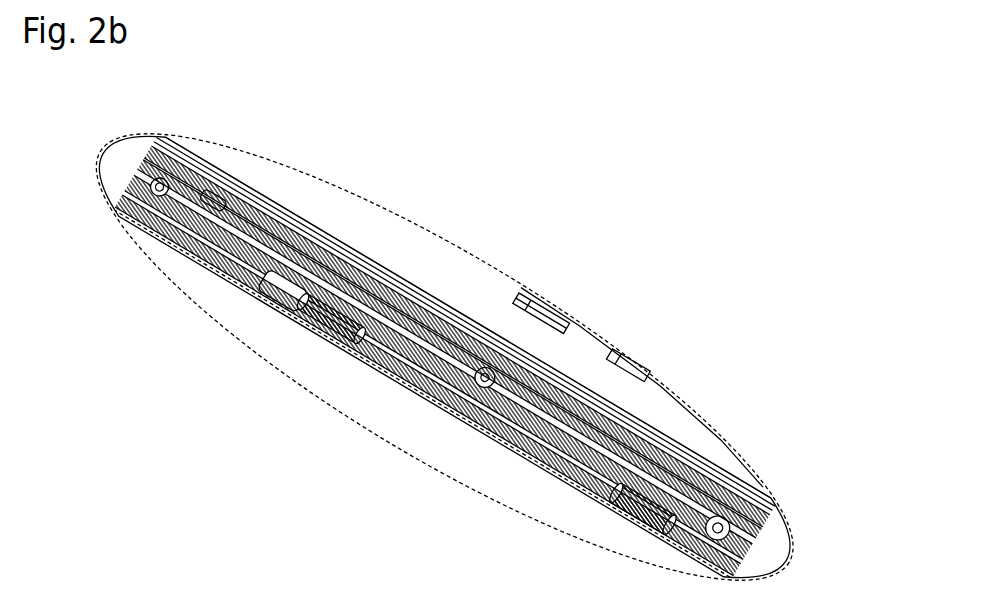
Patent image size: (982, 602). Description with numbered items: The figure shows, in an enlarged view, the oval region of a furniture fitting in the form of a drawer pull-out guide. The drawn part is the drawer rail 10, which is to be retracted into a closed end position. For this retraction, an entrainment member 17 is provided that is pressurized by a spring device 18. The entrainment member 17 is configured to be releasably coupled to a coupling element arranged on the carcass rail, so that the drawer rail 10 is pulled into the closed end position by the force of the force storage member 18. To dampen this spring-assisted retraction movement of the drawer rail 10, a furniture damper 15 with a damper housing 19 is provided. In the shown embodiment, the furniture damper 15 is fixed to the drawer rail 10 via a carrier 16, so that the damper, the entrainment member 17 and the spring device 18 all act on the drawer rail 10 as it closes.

The drawer rail 10 is at (268, 178).
The furniture damper 15 is at (346, 447).
The carrier 16 is at (712, 463).
The entrainment member 17 is at (333, 253).
The spring device 18 is at (615, 437).
The damper housing 19 is at (565, 463).